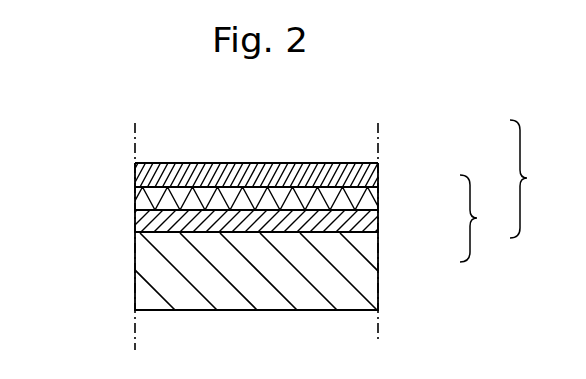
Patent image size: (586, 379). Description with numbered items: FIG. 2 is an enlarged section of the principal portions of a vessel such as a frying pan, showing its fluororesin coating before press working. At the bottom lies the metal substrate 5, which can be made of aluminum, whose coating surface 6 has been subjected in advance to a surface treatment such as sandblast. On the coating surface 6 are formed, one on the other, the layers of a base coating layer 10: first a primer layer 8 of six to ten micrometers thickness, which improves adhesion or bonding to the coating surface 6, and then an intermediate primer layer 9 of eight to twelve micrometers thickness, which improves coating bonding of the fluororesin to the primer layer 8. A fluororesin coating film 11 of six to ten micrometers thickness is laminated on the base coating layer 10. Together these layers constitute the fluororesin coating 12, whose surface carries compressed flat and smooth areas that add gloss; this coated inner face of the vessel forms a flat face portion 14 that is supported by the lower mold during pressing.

The metal substrate 5 is at (365, 284).
The coating surface 6 is at (182, 229).
The primer layer 8 is at (377, 222).
The intermediate primer layer 9 is at (377, 201).
The base coating layer 10 is at (486, 218).
The fluororesin coating film 11 is at (378, 172).
The fluororesin coating 12 is at (536, 179).
The flat face portion 14 is at (187, 164).